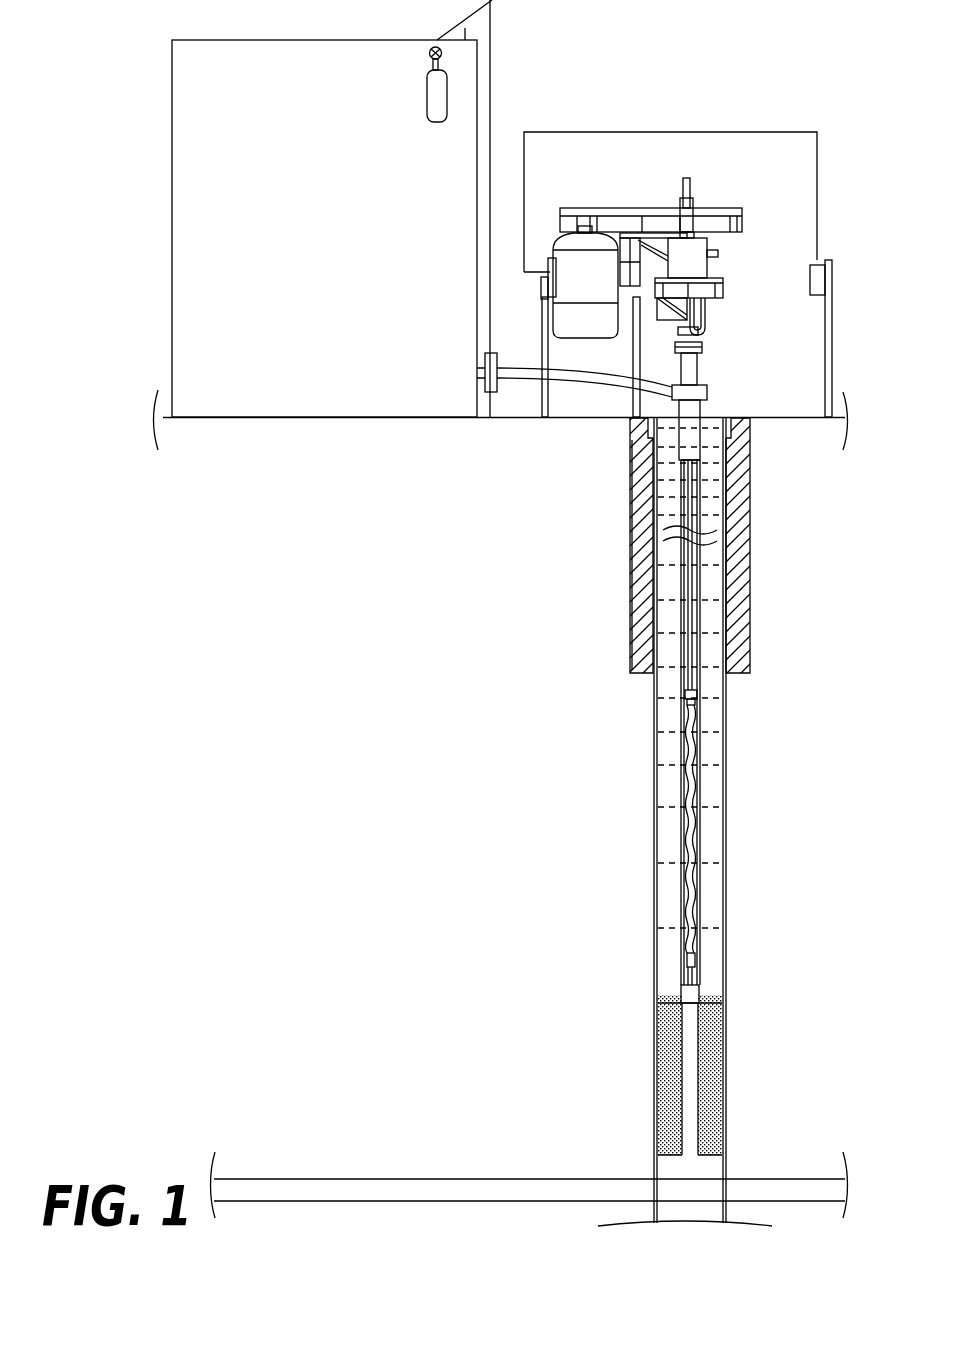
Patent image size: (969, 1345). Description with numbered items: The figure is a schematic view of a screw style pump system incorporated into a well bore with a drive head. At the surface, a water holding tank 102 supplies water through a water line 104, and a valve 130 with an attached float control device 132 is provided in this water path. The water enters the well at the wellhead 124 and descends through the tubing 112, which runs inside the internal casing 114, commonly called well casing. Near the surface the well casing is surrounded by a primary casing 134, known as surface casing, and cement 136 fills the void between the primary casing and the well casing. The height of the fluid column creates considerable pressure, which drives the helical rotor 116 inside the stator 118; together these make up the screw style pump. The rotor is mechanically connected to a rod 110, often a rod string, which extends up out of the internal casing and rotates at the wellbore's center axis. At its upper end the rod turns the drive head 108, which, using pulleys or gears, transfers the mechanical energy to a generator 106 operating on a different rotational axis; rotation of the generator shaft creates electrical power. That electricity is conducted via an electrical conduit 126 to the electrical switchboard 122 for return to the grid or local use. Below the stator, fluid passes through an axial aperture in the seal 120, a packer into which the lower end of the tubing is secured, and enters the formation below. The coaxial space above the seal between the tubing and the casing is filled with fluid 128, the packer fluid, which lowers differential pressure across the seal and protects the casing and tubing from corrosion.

The water holding tank 102 is at (337, 232).
The water line 104 is at (518, 368).
The generator 106 is at (584, 215).
The drive head 108 is at (697, 260).
The rod 110 is at (693, 485).
The tubing 112 is at (702, 575).
The internal casing 114 is at (728, 722).
The helical rotor 116 is at (692, 927).
The stator 118 is at (700, 858).
The seal 120 is at (725, 1083).
The electrical switchboard 122 is at (810, 275).
The wellhead 124 is at (710, 408).
The electrical conduit 126 is at (645, 132).
The fluid 128 is at (667, 900).
The valve 130 is at (495, 394).
The float control device 132 is at (492, 63).
The primary casing 134 is at (627, 575).
The cement 136 is at (642, 495).